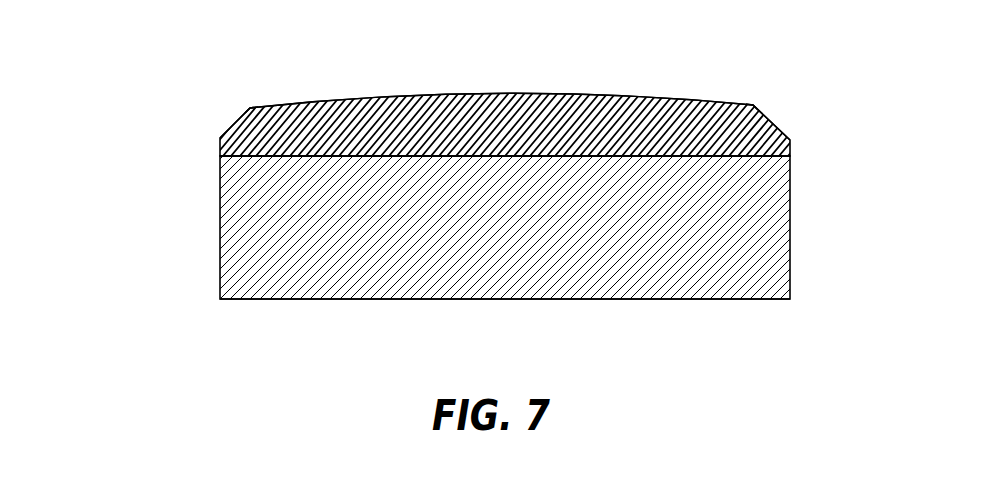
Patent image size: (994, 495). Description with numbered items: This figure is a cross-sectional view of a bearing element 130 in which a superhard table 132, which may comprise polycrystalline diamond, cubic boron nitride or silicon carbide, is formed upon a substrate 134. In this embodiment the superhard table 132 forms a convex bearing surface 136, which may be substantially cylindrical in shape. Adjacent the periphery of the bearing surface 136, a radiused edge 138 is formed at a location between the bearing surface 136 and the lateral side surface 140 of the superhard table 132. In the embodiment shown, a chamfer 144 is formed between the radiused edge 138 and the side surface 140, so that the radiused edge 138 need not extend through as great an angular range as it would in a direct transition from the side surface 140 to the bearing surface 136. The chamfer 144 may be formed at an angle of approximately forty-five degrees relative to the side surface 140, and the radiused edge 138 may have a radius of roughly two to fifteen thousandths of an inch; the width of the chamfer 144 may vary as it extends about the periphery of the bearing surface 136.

The bearing element 130 is at (185, 219).
The superhard table 132 is at (211, 118).
The substrate 134 is at (275, 306).
The convex bearing surface 136 is at (432, 96).
The radiused edge 138 is at (250, 107).
The side surface 140 is at (220, 149).
The chamfer 144 is at (237, 121).